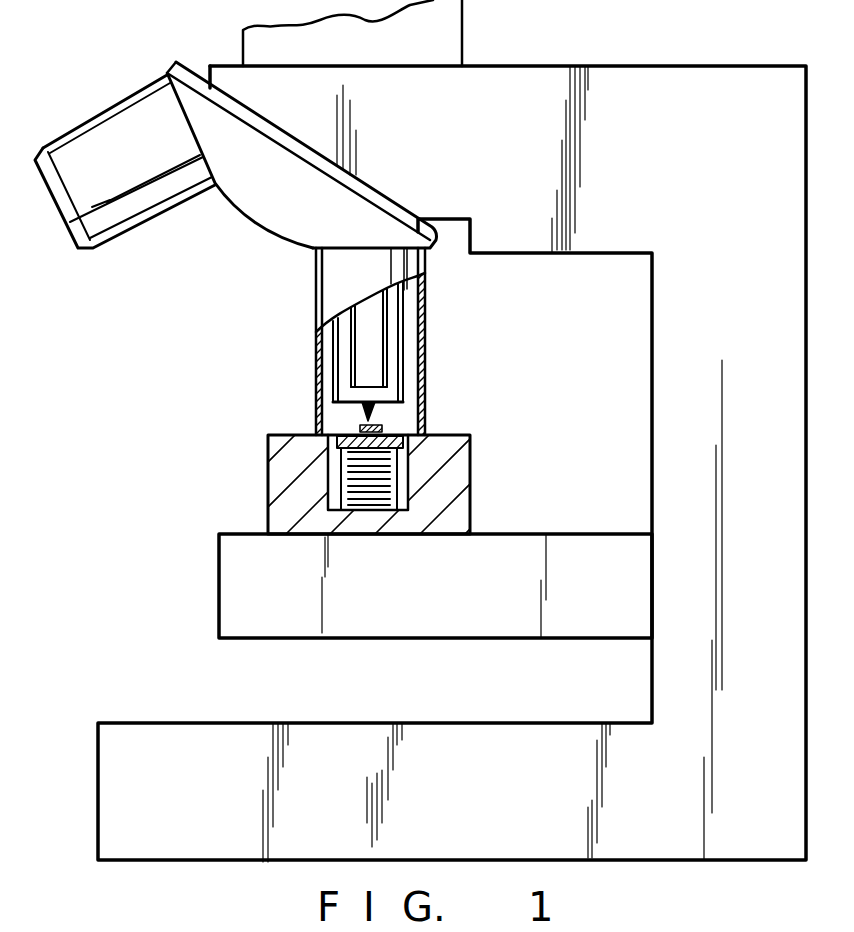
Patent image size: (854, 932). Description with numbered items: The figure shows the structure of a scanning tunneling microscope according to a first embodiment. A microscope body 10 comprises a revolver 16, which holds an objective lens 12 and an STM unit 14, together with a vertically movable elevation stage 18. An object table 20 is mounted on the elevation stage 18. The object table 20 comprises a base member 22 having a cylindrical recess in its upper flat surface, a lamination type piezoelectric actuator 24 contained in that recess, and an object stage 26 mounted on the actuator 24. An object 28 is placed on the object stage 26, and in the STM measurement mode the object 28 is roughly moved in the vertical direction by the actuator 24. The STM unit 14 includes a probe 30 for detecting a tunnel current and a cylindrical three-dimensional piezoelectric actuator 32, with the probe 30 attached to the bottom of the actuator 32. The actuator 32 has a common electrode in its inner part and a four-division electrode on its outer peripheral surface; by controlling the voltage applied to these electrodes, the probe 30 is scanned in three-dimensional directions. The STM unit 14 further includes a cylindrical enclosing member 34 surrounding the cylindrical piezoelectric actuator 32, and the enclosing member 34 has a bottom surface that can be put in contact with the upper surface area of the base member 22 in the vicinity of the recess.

The microscope body 10 is at (710, 66).
The objective lens 12 is at (104, 116).
The STM unit 14 is at (430, 300).
The revolver 16 is at (237, 205).
The elevation stage 18 is at (219, 578).
The object table 20 is at (459, 435).
The base member 22 is at (268, 510).
The lamination type piezoelectric actuator 24 is at (345, 480).
The object stage 26 is at (405, 447).
The object 28 is at (359, 427).
The probe 30 is at (372, 414).
The cylindrical three-dimensional piezoelectric actuator 32 is at (320, 353).
The cylindrical enclosing member 34 is at (427, 327).